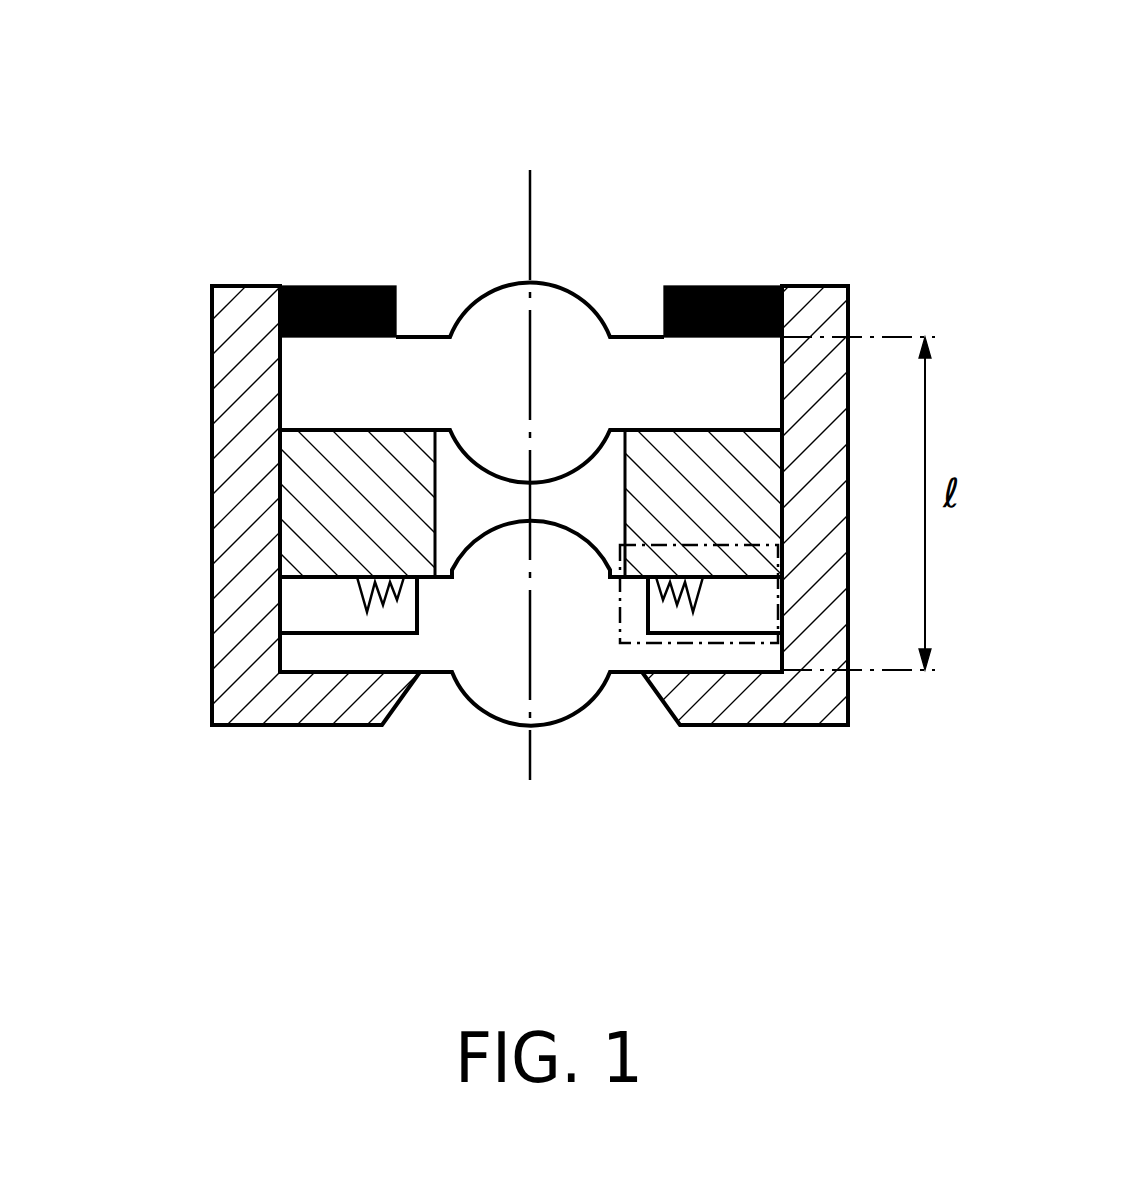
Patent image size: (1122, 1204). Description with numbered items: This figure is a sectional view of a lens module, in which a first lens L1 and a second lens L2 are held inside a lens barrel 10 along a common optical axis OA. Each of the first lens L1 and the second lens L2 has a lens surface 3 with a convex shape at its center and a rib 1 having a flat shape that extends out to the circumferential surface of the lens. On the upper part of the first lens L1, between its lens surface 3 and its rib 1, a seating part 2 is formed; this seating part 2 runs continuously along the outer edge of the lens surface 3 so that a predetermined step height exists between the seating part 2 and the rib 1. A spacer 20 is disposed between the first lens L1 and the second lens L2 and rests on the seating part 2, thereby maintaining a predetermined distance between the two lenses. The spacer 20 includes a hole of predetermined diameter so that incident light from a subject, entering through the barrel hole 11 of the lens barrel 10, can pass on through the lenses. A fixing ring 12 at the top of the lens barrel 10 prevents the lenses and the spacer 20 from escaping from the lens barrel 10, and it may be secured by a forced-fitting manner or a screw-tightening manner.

The rib 1 is at (723, 643).
The seating part 2 is at (633, 585).
The lens surface 3 is at (531, 715).
The lens barrel 10 is at (250, 543).
The barrel hole 11 is at (402, 700).
The fixing ring 12 is at (745, 287).
The spacer 20 is at (307, 470).
The first lens L1 is at (558, 675).
The second lens L2 is at (502, 315).
The optical axis OA is at (530, 200).